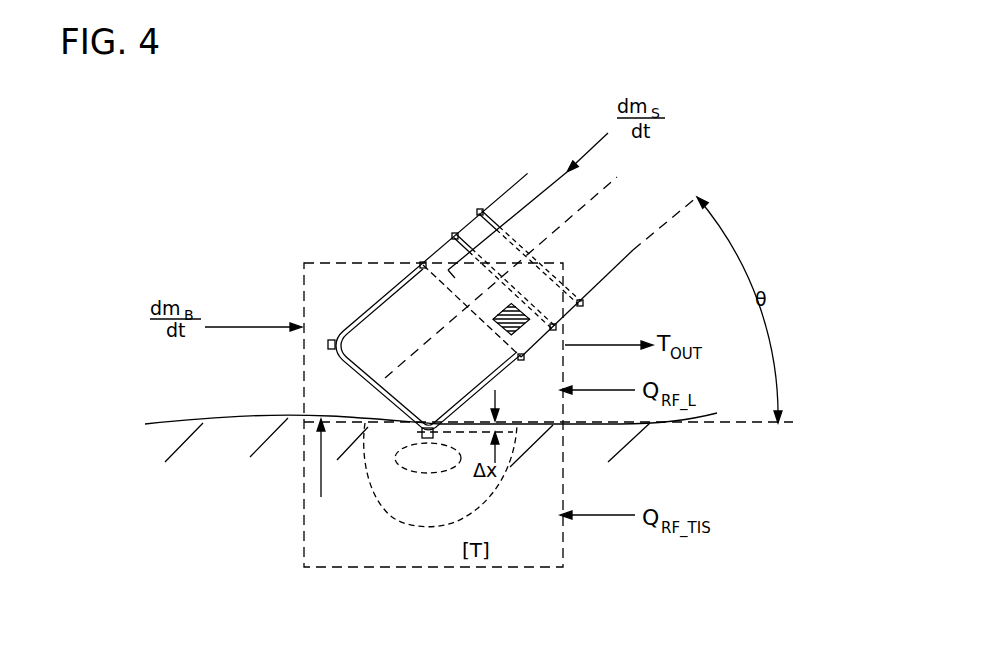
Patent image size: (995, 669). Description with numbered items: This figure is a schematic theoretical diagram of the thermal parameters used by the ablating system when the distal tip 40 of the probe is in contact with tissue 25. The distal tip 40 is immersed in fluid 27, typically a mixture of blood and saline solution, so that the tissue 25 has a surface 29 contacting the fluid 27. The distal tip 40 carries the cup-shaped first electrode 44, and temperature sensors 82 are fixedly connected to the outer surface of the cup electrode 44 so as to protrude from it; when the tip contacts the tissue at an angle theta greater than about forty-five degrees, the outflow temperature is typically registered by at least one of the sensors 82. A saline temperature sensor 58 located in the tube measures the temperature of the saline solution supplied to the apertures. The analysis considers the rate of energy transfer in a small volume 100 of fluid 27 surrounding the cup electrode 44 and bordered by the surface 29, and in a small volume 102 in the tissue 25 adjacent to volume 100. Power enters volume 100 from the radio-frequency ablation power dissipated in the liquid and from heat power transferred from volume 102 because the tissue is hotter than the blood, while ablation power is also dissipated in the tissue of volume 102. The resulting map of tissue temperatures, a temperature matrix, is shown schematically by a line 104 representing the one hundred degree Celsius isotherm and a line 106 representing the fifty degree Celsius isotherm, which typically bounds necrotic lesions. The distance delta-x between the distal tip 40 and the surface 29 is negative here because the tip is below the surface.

The distal tip 40 is at (285, 163).
The fluid 27 is at (191, 186).
The first electrode 44 is at (390, 292).
The temperature sensors 82 is at (331, 340).
The saline temperature sensor 58 is at (451, 266).
The volume 100 is at (304, 263).
The surface 29 is at (165, 425).
The tissue 25 is at (212, 437).
The volume 102 is at (303, 512).
The line 106 is at (413, 527).
The line 104 is at (428, 473).